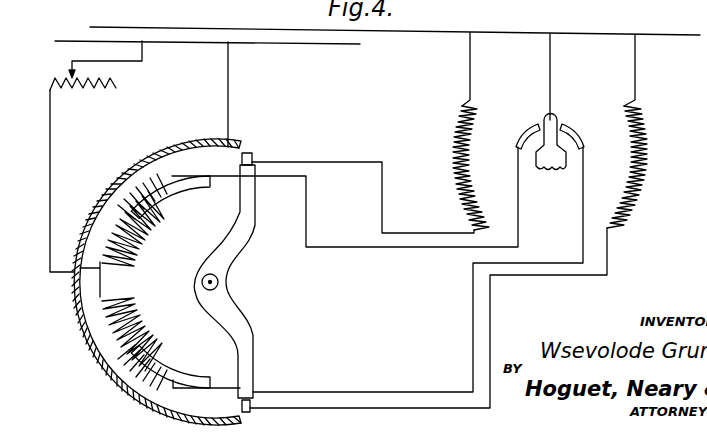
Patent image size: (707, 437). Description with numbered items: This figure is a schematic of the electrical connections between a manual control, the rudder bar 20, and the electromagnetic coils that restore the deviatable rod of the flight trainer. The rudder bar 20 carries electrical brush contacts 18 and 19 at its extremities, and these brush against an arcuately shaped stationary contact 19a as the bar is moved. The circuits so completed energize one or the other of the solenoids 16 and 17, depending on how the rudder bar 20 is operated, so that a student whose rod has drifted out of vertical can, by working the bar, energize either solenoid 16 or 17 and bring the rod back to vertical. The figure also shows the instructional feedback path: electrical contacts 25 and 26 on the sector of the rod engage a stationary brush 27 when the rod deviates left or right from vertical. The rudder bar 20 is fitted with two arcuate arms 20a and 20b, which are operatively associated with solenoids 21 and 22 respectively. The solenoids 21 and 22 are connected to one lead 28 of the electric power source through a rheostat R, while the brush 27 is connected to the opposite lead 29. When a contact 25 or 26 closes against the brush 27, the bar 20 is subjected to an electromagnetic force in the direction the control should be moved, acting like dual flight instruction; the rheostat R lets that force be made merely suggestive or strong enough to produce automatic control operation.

The solenoid 16 is at (456, 141).
The solenoid 17 is at (650, 166).
The electrical brush contact 18 is at (252, 157).
The electrical brush contact 19 is at (252, 410).
The arcuately shaped stationary contact 19a is at (145, 156).
The rudder bar 20 is at (255, 330).
The arcuate arm 20a is at (212, 190).
The arcuate arm 20b is at (198, 352).
The solenoid 21 is at (136, 250).
The solenoid 22 is at (140, 328).
The electrical contact 25 is at (528, 126).
The electrical contact 26 is at (577, 139).
The stationary brush 27 is at (553, 122).
The lead 28 is at (58, 44).
The lead 29 is at (116, 26).